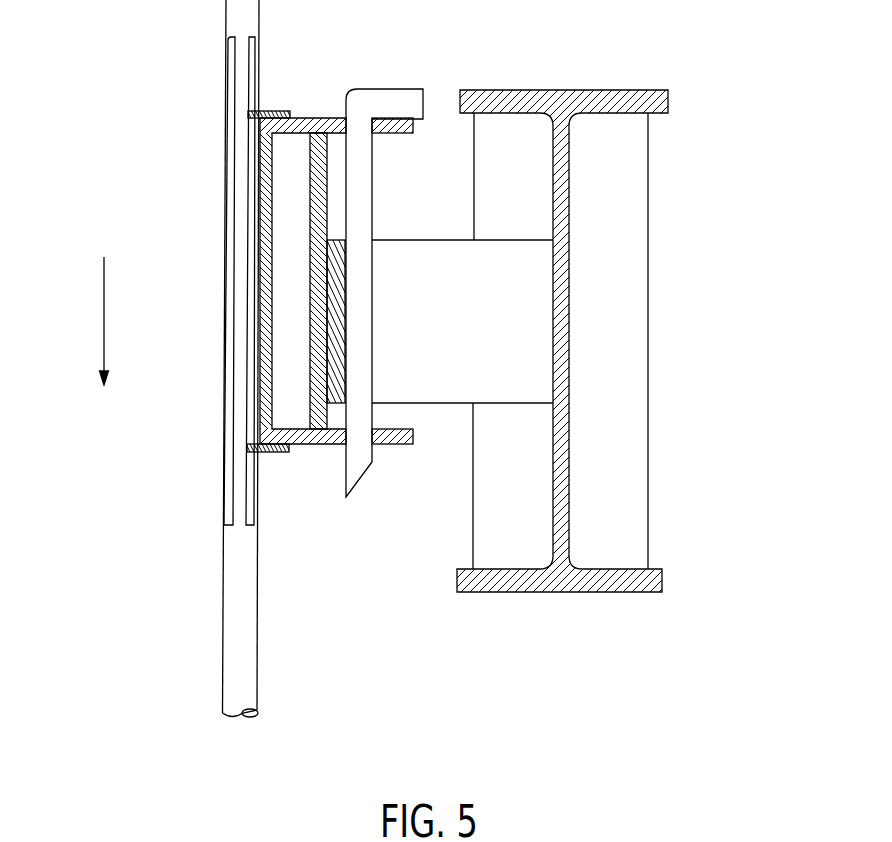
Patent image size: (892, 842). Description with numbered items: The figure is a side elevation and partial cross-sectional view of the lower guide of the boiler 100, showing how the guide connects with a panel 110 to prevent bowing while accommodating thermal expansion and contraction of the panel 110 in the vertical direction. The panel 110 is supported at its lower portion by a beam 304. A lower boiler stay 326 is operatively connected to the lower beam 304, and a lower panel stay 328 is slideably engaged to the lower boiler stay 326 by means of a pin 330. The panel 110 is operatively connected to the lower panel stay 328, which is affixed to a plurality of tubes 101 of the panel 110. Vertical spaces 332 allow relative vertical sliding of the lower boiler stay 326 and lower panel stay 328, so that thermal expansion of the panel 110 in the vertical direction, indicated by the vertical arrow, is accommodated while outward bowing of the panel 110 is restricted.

The boiler 100 is at (148, 693).
The tubes 101 is at (225, 327).
The panel 110 is at (148, 442).
The beam 304 is at (627, 102).
The lower boiler stay 326 is at (437, 207).
The lower panel stay 328 is at (315, 82).
The pin 330 is at (378, 100).
The vertical spaces 332 is at (335, 183).